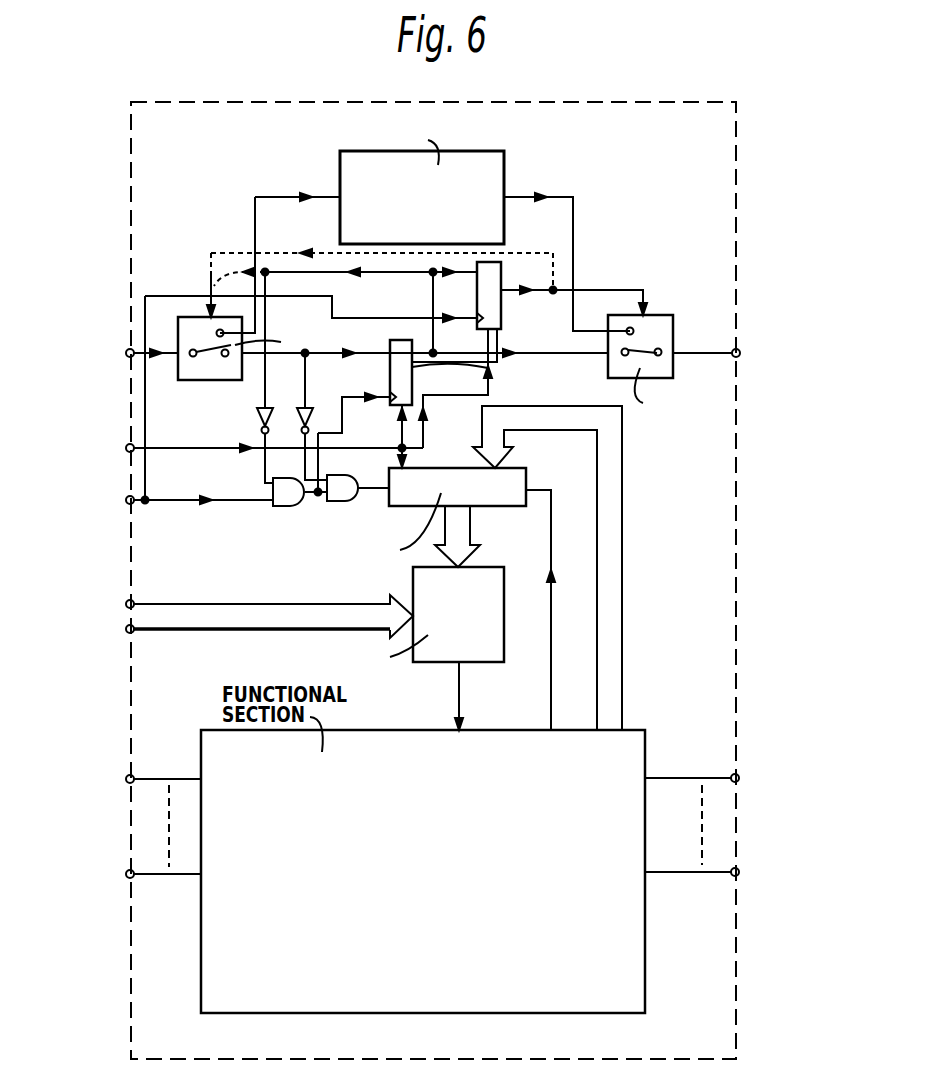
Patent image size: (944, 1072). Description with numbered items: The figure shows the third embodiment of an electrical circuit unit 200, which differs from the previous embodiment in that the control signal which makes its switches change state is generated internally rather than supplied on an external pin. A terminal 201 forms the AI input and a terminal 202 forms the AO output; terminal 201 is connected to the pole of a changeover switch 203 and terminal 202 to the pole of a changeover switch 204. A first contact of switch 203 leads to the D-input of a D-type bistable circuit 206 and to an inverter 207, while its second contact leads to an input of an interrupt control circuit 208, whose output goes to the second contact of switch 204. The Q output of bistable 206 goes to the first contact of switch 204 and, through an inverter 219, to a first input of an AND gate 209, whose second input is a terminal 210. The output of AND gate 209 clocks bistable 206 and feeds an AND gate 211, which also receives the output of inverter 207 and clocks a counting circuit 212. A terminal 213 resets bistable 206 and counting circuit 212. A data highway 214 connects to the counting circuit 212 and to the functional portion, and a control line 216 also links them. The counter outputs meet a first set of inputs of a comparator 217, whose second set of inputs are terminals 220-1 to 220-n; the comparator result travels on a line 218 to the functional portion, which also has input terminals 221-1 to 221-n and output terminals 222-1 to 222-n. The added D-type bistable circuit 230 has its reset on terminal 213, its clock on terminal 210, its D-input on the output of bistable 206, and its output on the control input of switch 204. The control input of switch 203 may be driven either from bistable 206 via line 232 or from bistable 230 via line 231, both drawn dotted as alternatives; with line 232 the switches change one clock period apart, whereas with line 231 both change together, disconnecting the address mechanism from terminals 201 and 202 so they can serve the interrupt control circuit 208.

The circuit unit 200 is at (738, 127).
The terminal 201 is at (127, 351).
The terminal 202 is at (740, 351).
The changeover switch 203 is at (200, 373).
The changeover switch 204 is at (657, 318).
The D-type bistable circuit 206 is at (414, 378).
The inverter 207 is at (311, 410).
The interrupt control circuit 208 is at (468, 152).
The AND gate 209 is at (283, 508).
The terminal 210 is at (127, 499).
The AND gate 211 is at (333, 475).
The counting circuit 212 is at (432, 476).
The terminal 213 is at (127, 447).
The data highway 214 is at (628, 544).
The control line 216 is at (551, 540).
The comparator 217 is at (485, 655).
The line 218 is at (459, 698).
The inverter 219 is at (256, 422).
The terminal 220-1 is at (127, 602).
The terminal 220-n is at (127, 632).
The input terminal 221-1 is at (127, 778).
The input terminal 221-n is at (127, 871).
The output terminal 222-1 is at (739, 777).
The output terminal 222-n is at (739, 870).
The D-type bistable circuit 230 is at (490, 278).
The line 231 is at (515, 251).
The line 232 is at (208, 283).